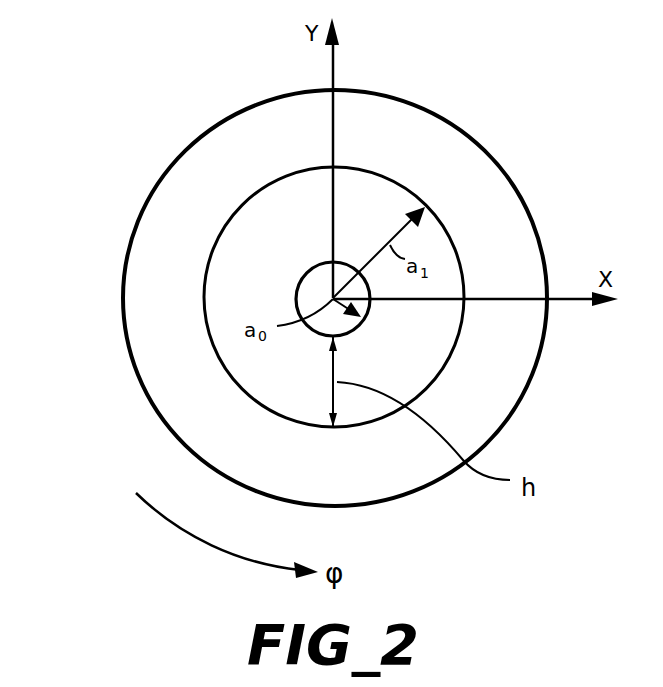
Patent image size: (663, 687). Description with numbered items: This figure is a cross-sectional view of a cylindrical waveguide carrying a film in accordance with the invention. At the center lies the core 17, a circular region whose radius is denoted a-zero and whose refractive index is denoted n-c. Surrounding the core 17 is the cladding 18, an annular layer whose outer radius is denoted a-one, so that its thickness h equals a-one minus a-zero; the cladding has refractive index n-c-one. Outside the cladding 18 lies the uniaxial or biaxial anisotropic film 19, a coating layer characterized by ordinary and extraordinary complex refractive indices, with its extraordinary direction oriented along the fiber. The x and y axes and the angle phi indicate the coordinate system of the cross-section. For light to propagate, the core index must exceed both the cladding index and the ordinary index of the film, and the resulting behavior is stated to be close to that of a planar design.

The core 17 is at (313, 283).
The cladding 18 is at (377, 207).
The uniaxial or biaxial anisotropic film 19 is at (163, 308).